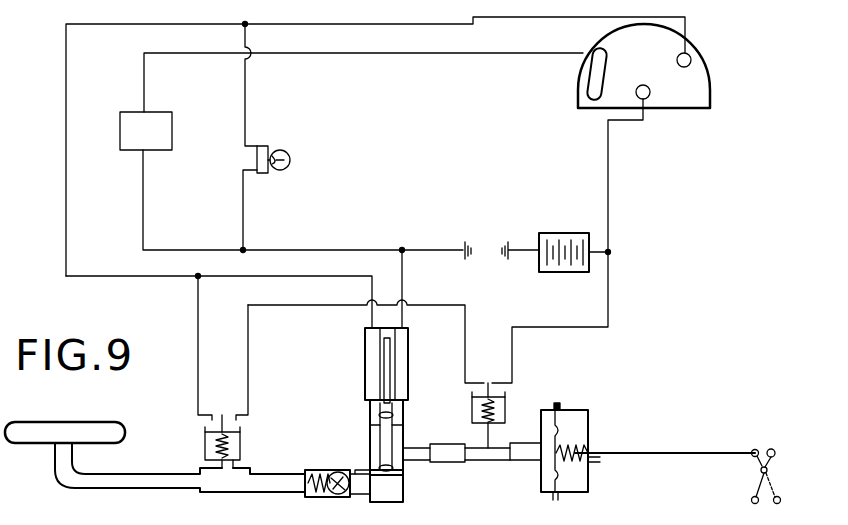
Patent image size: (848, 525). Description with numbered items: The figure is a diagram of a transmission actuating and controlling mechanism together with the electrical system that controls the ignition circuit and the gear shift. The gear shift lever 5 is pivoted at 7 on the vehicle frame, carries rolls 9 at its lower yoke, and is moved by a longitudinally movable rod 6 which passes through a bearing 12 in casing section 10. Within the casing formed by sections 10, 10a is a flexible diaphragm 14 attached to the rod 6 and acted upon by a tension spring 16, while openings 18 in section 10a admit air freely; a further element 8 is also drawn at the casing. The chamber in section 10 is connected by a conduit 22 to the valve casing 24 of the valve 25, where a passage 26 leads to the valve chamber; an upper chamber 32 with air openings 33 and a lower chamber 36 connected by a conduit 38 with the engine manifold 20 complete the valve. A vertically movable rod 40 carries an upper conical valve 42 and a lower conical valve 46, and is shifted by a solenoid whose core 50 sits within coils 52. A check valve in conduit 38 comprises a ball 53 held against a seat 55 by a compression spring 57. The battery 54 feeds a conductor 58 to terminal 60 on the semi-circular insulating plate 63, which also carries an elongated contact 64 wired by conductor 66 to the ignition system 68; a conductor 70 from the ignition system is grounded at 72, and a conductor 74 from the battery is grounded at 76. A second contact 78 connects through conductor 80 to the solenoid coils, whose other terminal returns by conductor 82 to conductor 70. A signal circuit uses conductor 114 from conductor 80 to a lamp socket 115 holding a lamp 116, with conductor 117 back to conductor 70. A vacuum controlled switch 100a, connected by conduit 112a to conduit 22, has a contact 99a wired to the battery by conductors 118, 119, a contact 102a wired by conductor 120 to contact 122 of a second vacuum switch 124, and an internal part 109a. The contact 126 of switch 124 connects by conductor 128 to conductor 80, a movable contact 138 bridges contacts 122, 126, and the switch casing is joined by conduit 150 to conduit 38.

The gear shift lever 5 is at (775, 460).
The longitudinally movable rod 6 is at (659, 453).
The pivot 7 is at (769, 472).
The cylinder port 8 is at (573, 404).
The rolls 9 is at (751, 500).
The casing section 10 is at (541, 476).
The casing section 10a is at (586, 418).
The bearing 12 is at (599, 463).
The flexible diaphragm 14 is at (559, 483).
The tension spring 16 is at (578, 441).
The openings 18 is at (588, 426).
The manifold 20 is at (76, 425).
The conduit 22 is at (448, 461).
The valve casing 24 is at (396, 437).
The valve 25 is at (369, 442).
The passage 26 is at (396, 450).
The chamber 32 is at (404, 405).
The openings 33 is at (372, 420).
The chamber 36 is at (396, 490).
The conduit 38 is at (105, 489).
The valve rod 40 is at (380, 432).
The conical valve 42 is at (384, 417).
The conical valve 46 is at (386, 488).
The solenoid core 50 is at (390, 356).
The solenoid coils 52 is at (365, 345).
The ball 53 is at (331, 476).
The battery 54 is at (563, 233).
The seat 55 is at (358, 476).
The compression spring 57 is at (306, 486).
The conductor 58 is at (608, 148).
The terminal 60 is at (645, 99).
The supporting plate 63 is at (705, 95).
The contact 64 is at (589, 74).
The conductor 66 is at (359, 53).
The ignition system 68 is at (172, 128).
The conductor 70 is at (143, 182).
The ground 72 is at (465, 238).
The conductor 74 is at (530, 250).
The ground 76 is at (505, 259).
The contact 78 is at (692, 60).
The conductor 80 is at (447, 25).
The conductor 82 is at (402, 278).
The contact 99a is at (500, 383).
The vacuum controlled switch 100a is at (505, 402).
The contact 102a is at (474, 393).
The spring 109a is at (476, 398).
The conduit 112a is at (488, 442).
The conductor 114 is at (245, 110).
The lamp socket 115 is at (263, 146).
The lamp 116 is at (290, 160).
The conductor 117 is at (243, 212).
The conductor 118 is at (608, 290).
The conductor 119 is at (617, 232).
The conductor 120 is at (465, 318).
The contact 122 is at (236, 414).
The second vacuum controlled switch 124 is at (204, 443).
The contact 126 is at (212, 414).
The conductor 128 is at (198, 316).
The movable switch contact 138 is at (211, 420).
The conduit 150 is at (236, 470).